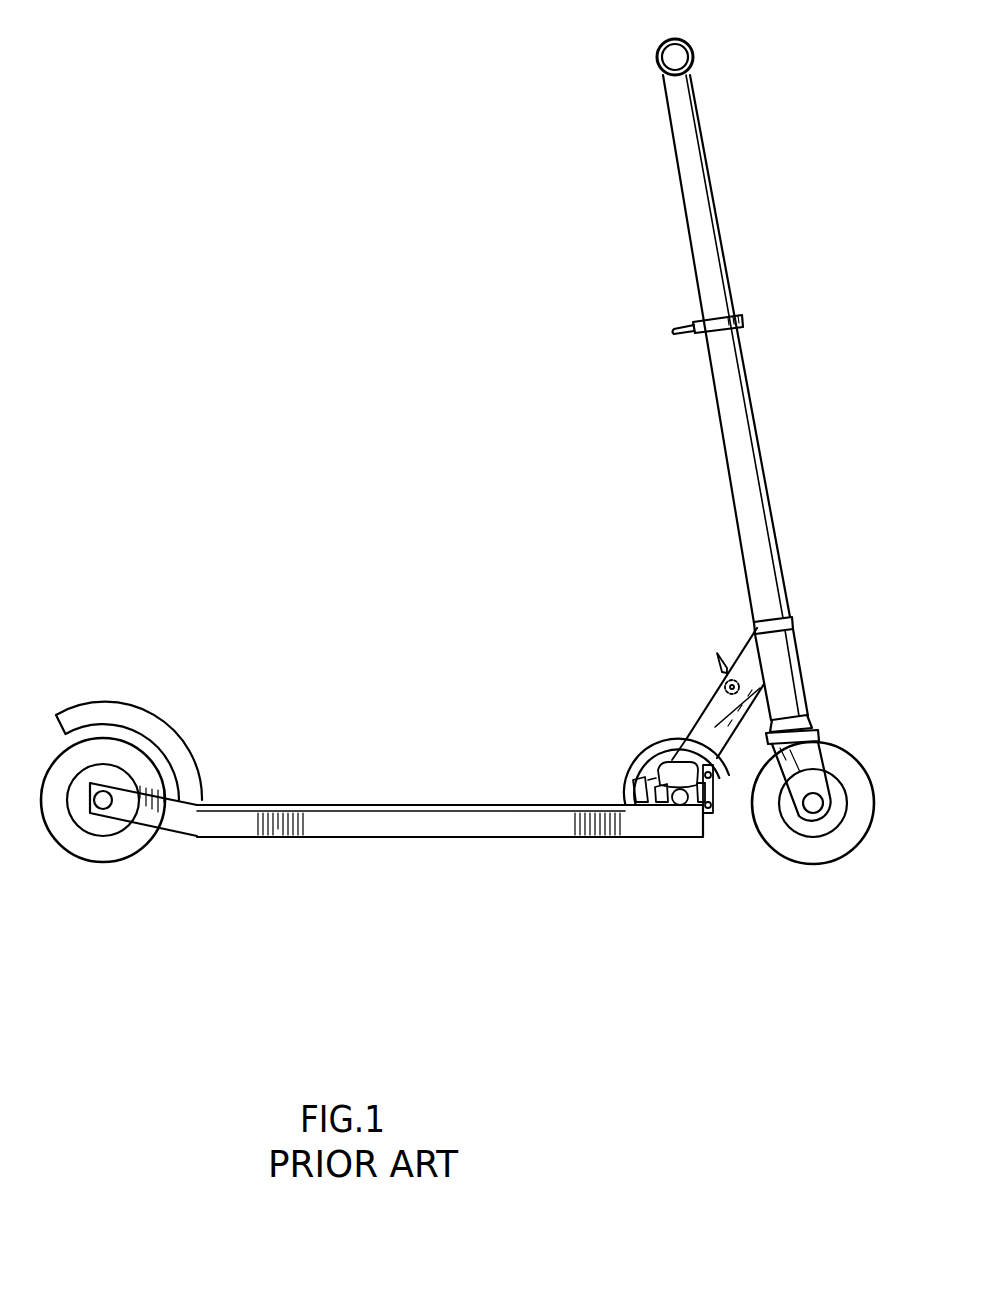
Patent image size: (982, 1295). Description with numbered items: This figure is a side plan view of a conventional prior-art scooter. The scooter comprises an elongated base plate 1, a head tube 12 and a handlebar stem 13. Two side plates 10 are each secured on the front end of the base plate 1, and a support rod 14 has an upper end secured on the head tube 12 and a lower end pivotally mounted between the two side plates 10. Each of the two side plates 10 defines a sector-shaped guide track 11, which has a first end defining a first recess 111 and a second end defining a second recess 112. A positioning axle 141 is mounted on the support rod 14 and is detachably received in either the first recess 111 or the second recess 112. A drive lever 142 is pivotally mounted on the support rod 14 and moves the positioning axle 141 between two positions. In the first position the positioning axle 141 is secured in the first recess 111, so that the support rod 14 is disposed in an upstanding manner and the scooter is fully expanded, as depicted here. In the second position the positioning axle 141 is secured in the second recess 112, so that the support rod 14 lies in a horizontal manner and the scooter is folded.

The base plate 1 is at (423, 823).
The side plates 10 is at (627, 783).
The sector-shaped guide track 11 is at (660, 755).
The first recess 111 is at (718, 772).
The second recess 112 is at (655, 780).
The head tube 12 is at (798, 668).
The handlebar stem 13 is at (750, 388).
The support rod 14 is at (703, 700).
The positioning axle 141 is at (715, 787).
The drive lever 142 is at (715, 650).